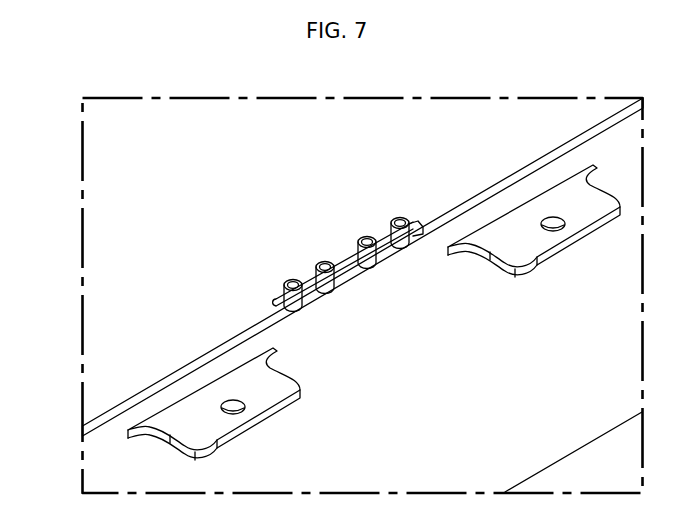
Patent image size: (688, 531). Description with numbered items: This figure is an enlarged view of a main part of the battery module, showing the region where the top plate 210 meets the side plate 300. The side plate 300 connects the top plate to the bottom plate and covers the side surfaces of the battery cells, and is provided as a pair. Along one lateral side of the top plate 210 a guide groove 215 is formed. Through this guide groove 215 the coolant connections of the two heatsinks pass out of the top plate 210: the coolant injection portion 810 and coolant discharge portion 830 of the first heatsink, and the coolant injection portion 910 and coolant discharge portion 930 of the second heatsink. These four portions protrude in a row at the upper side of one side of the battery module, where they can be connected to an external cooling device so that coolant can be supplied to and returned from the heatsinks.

The top plate 210 is at (97, 313).
The side plate 300 is at (97, 470).
The guide groove 215 is at (278, 301).
The coolant injection portion 910 is at (294, 279).
The coolant injection portion 810 is at (326, 261).
The coolant discharge portion 830 is at (368, 236).
The coolant discharge portion 930 is at (400, 217).